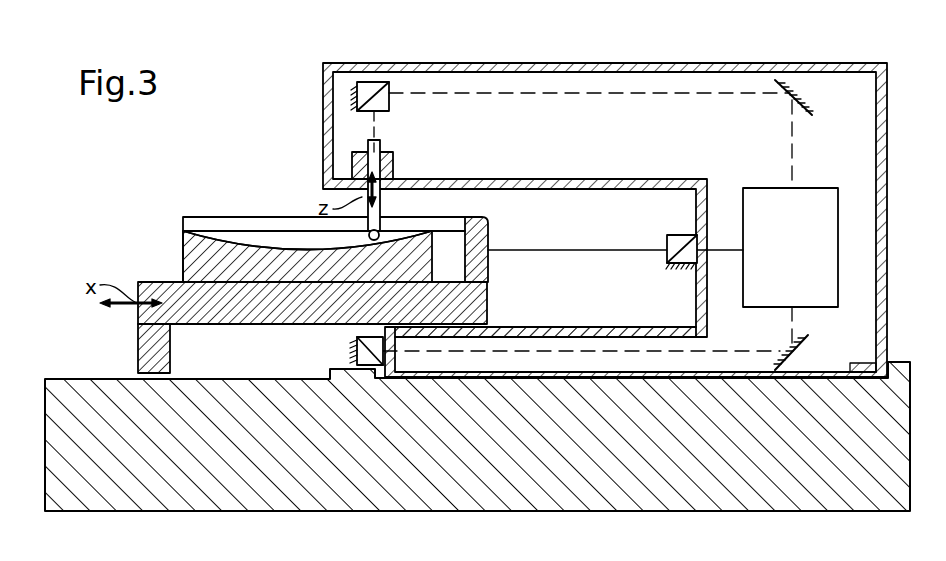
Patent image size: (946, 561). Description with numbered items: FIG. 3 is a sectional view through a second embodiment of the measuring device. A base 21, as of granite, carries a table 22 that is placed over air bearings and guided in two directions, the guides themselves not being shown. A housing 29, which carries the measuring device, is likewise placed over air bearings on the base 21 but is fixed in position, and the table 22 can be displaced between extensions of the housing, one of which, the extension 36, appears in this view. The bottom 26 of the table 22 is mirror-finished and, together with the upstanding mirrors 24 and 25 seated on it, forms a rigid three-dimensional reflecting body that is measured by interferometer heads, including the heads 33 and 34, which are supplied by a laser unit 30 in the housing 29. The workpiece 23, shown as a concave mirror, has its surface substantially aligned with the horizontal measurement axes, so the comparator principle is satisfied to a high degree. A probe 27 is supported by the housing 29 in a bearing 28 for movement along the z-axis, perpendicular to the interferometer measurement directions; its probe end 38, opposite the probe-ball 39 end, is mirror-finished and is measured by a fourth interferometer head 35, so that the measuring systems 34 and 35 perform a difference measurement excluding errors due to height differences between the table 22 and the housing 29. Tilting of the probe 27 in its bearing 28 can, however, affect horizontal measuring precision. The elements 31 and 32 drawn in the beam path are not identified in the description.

The base 21 is at (415, 511).
The table 22 is at (146, 320).
The workpiece 23 is at (195, 247).
The upstanding mirror 24 is at (490, 238).
The upstanding mirror 25 is at (232, 224).
The bottom of table 26 is at (200, 325).
The probe 27 is at (382, 216).
The bearing 28 is at (393, 165).
The housing 29 is at (708, 63).
The laser unit 30 is at (822, 240).
The mirror 31 is at (805, 100).
The mirror 32 is at (805, 350).
The interferometer head 33 is at (670, 237).
The interferometer head 34 is at (355, 350).
The fourth interferometer head 35 is at (365, 82).
The extension 36 is at (580, 328).
The probe end 38 is at (378, 148).
The probe-ball 39 is at (355, 237).